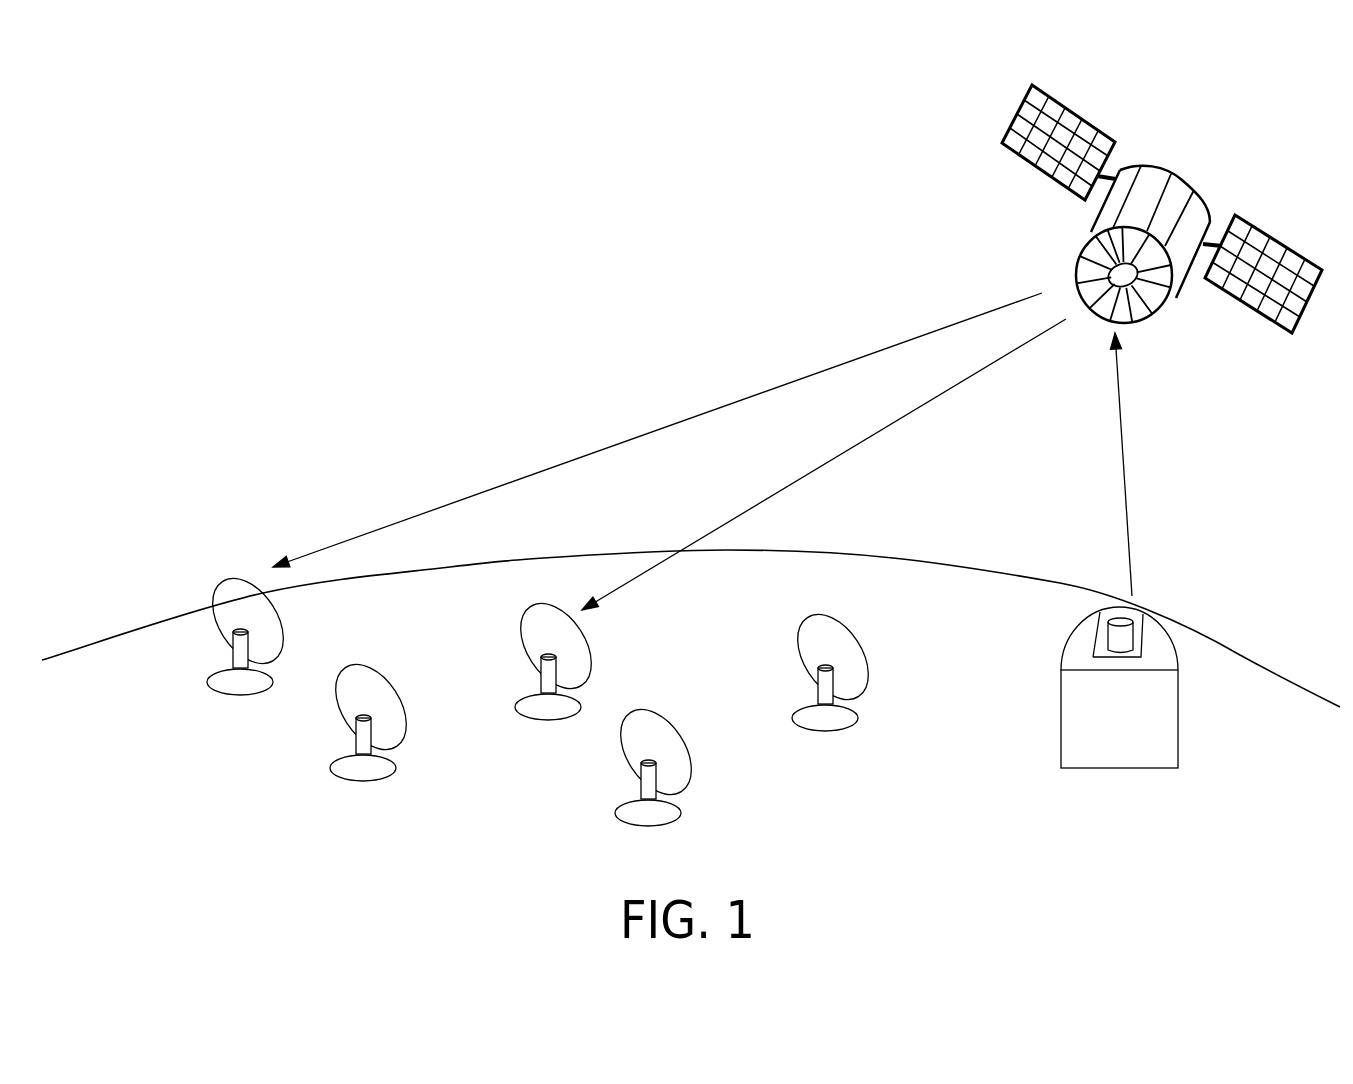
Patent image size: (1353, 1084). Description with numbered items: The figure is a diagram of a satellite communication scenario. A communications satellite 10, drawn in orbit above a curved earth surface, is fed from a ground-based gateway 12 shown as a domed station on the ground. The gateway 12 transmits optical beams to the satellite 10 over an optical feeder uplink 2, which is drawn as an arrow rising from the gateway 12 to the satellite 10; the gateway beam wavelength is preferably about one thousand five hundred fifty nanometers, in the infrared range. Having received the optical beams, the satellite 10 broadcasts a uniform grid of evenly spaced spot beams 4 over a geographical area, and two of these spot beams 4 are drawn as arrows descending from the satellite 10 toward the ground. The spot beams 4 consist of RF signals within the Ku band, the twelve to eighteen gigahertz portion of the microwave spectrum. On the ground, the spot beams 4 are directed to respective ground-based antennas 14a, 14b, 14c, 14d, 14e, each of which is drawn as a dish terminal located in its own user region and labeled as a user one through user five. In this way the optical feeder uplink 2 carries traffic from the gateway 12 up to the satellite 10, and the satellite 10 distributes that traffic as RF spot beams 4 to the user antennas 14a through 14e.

The communications satellite 10 is at (1170, 310).
The optical feeder uplink 2 is at (1130, 527).
The spot beams 4 is at (590, 453).
The ground-based gateway 12 is at (1178, 698).
The ground-based antenna 14a is at (222, 577).
The ground-based antenna 14b is at (342, 708).
The ground-based antenna 14c is at (527, 607).
The ground-based antenna 14d is at (658, 717).
The ground-based antenna 14e is at (838, 622).